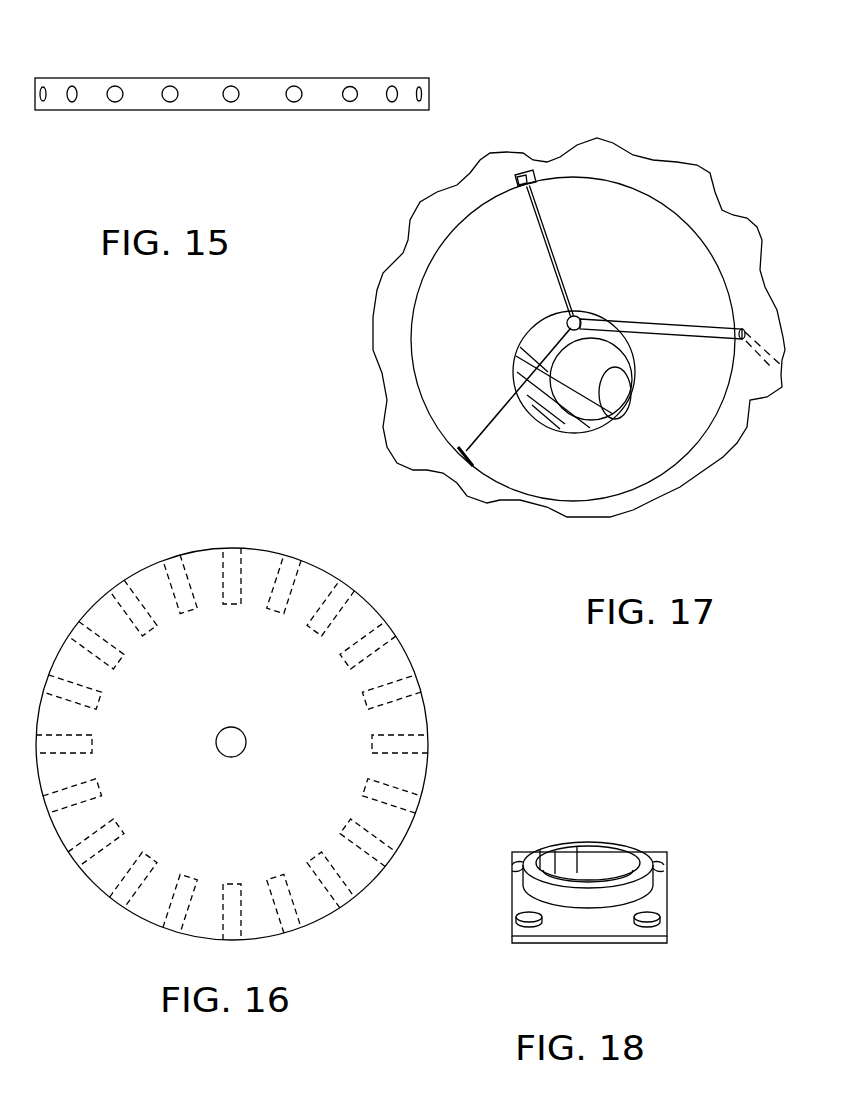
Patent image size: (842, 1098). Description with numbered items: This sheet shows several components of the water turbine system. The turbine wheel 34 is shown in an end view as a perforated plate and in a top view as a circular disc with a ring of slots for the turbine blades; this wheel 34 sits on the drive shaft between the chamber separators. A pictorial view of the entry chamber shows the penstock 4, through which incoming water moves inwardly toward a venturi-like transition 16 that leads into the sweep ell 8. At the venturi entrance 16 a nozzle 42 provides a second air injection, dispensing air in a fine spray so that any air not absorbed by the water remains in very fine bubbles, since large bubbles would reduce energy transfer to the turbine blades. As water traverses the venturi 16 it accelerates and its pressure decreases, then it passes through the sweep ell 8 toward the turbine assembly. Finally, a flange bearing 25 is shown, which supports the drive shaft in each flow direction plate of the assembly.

In FIG. 15, the turbine wheel 34 is at (322, 78).
In FIG. 16, the turbine wheel 34 is at (408, 650).
In FIG. 17, the penstock 4 is at (412, 450).
In FIG. 17, the venturi-like transition 16 is at (553, 473).
In FIG. 17, the sweep ell 8 is at (608, 415).
In FIG. 17, the nozzle 42 is at (569, 314).
In FIG. 18, the flange bearing 25 is at (668, 893).